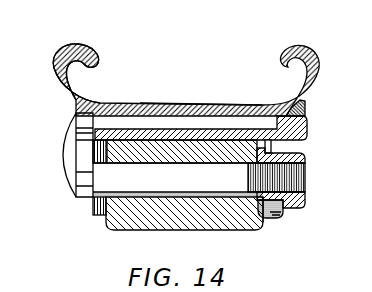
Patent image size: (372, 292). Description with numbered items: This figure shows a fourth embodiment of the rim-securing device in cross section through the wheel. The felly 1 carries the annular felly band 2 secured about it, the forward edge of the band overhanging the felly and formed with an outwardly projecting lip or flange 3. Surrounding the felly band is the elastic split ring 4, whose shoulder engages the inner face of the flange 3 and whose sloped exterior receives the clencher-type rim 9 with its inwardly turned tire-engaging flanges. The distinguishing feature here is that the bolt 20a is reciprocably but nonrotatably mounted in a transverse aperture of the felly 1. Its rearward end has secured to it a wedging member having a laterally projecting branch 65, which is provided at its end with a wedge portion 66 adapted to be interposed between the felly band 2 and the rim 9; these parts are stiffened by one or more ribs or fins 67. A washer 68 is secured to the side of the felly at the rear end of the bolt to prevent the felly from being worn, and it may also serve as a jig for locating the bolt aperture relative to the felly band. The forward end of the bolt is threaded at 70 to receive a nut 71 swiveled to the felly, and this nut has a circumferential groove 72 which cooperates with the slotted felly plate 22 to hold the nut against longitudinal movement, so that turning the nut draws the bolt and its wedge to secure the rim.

The felly 1 is at (147, 212).
The felly band 2 is at (194, 108).
The lip or flange 3 is at (308, 132).
The elastic split ring 4 is at (306, 108).
The rim 9 is at (158, 104).
The bolt 20a is at (198, 168).
The slotted plate 22 is at (263, 222).
The laterally projecting branch 65 is at (90, 156).
The wedge portion 66 is at (93, 104).
The ribs or fins 67 is at (70, 149).
The washer 68 is at (97, 200).
The threaded portion 70 is at (301, 173).
The nut 71 is at (293, 208).
The circumferential groove 72 is at (278, 217).